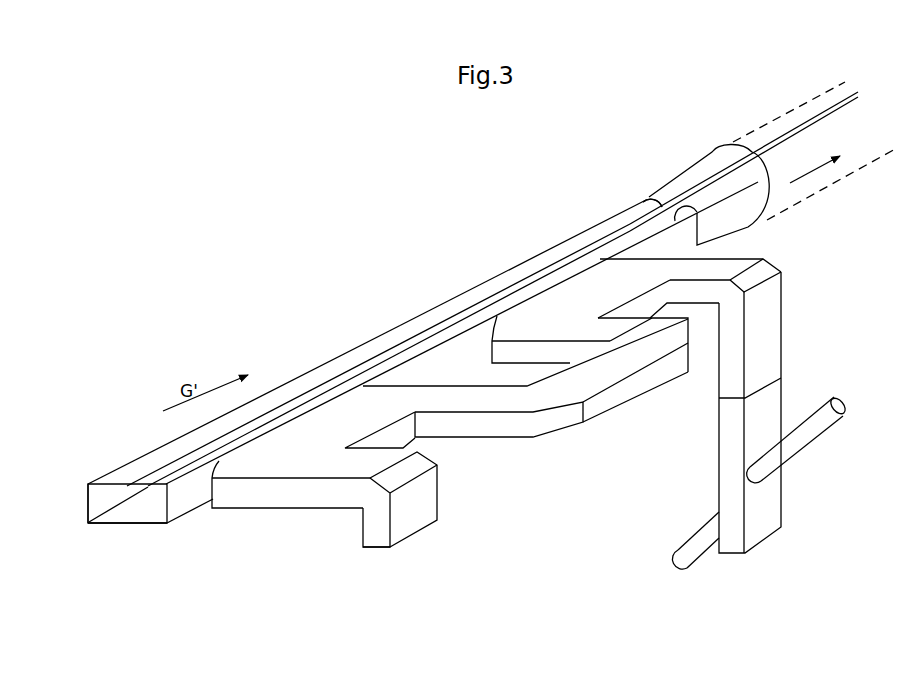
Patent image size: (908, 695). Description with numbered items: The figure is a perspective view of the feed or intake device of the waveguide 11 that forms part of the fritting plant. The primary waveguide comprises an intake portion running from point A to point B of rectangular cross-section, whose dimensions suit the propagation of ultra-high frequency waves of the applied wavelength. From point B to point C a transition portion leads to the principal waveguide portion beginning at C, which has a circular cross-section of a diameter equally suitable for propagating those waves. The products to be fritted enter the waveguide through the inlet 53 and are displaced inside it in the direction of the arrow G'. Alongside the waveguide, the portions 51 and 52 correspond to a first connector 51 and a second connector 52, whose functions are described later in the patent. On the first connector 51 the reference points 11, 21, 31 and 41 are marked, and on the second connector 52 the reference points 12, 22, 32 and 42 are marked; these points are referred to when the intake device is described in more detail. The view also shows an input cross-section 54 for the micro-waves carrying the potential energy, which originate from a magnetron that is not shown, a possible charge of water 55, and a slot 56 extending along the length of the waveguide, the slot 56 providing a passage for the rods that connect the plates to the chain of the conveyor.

The waveguide 11 is at (244, 425).
The reference point 1_2 12 is at (579, 273).
The reference point 2_1 21 is at (263, 415).
The reference point 2_2 22 is at (515, 285).
The reference point 3_1 31 is at (394, 499).
The reference point 3_2 32 is at (643, 345).
The reference point 4_1 41 is at (516, 383).
The reference point 4_2 42 is at (698, 285).
The first connector 51 is at (280, 460).
The second connector 52 is at (558, 322).
The inlet 53 is at (130, 534).
The input cross-section 54 is at (410, 556).
The charge of water 55 is at (762, 560).
The slot 56 is at (855, 87).
The point A is at (78, 501).
The point B is at (645, 194).
The point C is at (709, 185).